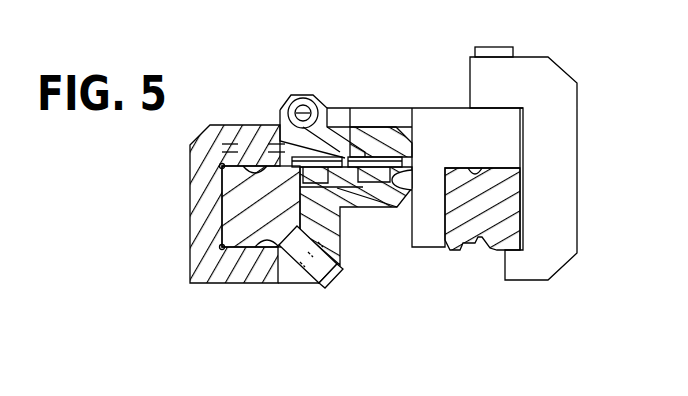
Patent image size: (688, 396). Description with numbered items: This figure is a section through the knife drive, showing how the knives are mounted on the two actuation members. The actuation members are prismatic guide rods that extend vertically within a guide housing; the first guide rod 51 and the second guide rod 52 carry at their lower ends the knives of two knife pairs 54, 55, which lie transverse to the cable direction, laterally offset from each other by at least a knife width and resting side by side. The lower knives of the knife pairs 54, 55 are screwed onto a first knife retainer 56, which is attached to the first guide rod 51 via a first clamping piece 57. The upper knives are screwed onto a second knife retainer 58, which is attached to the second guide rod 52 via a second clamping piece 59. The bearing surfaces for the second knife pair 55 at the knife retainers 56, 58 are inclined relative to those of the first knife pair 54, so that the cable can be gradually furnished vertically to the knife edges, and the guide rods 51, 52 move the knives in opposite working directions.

The first guide rod 51 is at (465, 237).
The second guide rod 52 is at (233, 200).
The first knife pair 54 is at (363, 150).
The second knife pair 55 is at (347, 210).
The first knife retainer 56 is at (427, 115).
The first clamping piece 57 is at (535, 64).
The second knife retainer 58 is at (238, 132).
The second clamping piece 59 is at (292, 278).